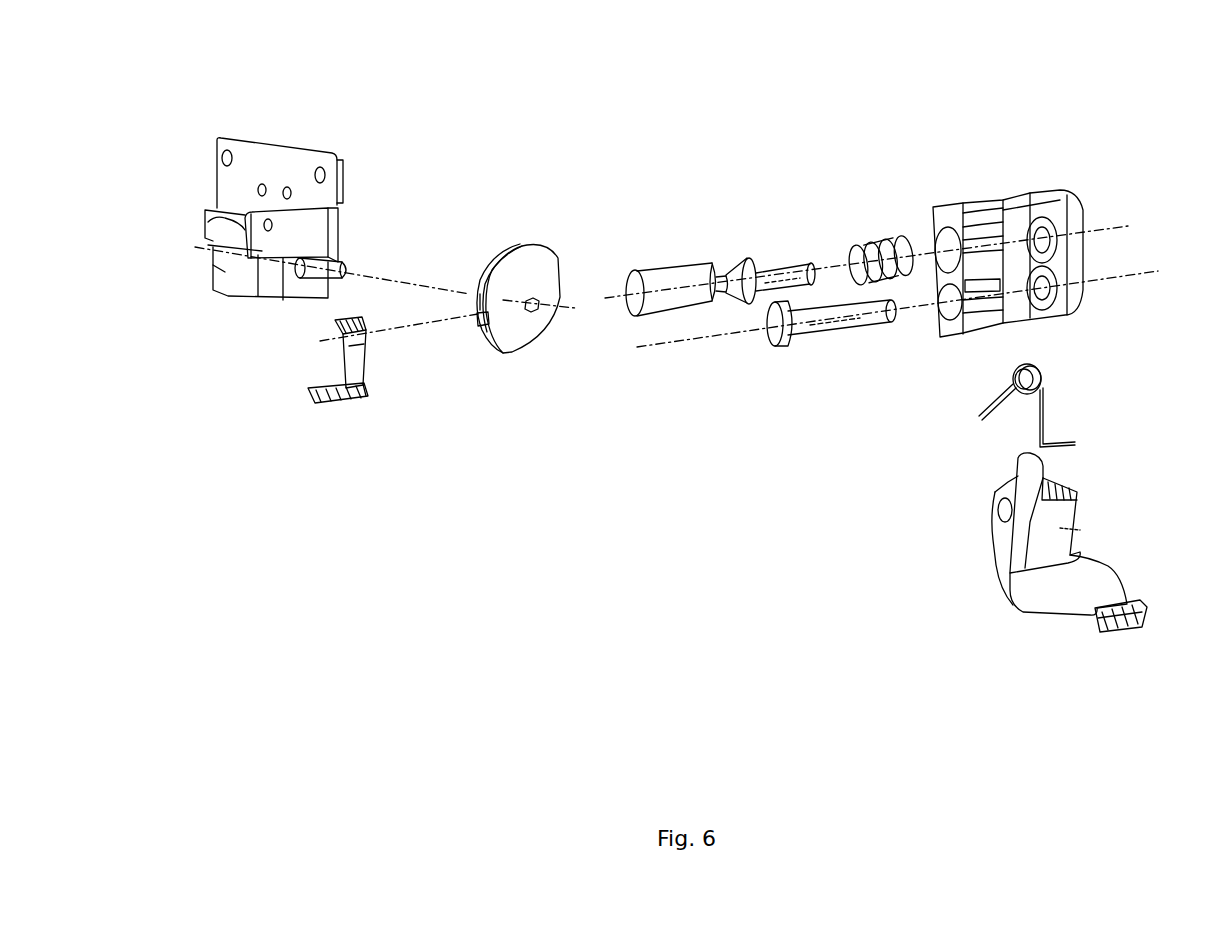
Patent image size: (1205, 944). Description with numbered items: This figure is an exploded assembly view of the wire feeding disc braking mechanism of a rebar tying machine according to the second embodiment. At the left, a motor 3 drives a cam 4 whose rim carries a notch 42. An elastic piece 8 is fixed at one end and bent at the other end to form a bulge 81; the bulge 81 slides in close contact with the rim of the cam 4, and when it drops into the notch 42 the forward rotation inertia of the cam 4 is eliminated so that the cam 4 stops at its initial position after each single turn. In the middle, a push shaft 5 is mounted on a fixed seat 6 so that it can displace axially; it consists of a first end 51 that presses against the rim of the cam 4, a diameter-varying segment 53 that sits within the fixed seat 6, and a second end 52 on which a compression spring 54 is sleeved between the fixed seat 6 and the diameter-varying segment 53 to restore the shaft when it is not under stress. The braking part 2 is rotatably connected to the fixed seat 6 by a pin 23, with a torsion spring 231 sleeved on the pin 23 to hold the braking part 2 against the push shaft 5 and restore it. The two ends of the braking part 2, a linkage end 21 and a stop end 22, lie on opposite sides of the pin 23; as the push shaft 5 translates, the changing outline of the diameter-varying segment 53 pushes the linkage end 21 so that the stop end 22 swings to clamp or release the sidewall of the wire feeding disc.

The braking part 2 is at (1080, 530).
The linkage end 21 is at (995, 492).
The stop end 22 is at (1110, 634).
The pin 23 is at (832, 325).
The torsion spring 231 is at (1043, 372).
The motor 3 is at (212, 290).
The cam 4 is at (528, 325).
The notch 42 is at (478, 325).
The push shaft 5 is at (662, 202).
The first end 51 is at (693, 277).
The second end 52 is at (792, 268).
The diameter-varying segment 53 is at (745, 263).
The compression spring 54 is at (898, 240).
The fixed seat 6 is at (1003, 203).
The elastic piece 8 is at (333, 392).
The bulge 81 is at (363, 390).